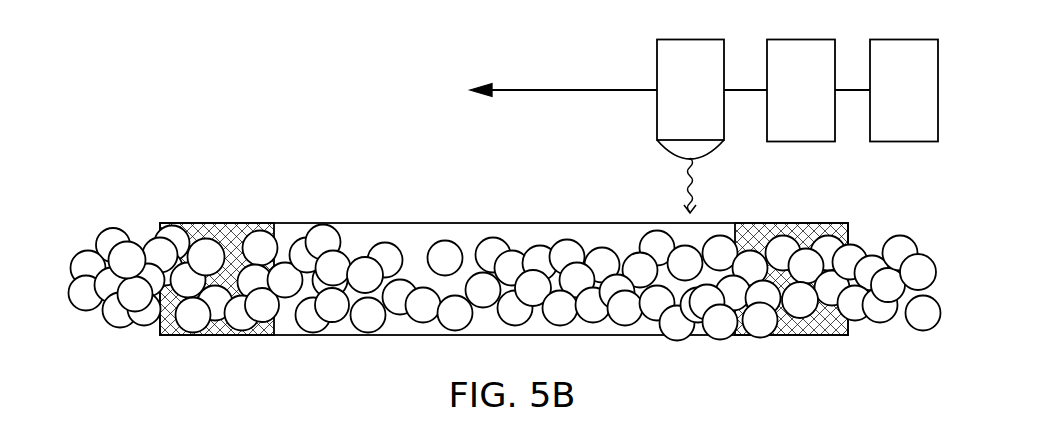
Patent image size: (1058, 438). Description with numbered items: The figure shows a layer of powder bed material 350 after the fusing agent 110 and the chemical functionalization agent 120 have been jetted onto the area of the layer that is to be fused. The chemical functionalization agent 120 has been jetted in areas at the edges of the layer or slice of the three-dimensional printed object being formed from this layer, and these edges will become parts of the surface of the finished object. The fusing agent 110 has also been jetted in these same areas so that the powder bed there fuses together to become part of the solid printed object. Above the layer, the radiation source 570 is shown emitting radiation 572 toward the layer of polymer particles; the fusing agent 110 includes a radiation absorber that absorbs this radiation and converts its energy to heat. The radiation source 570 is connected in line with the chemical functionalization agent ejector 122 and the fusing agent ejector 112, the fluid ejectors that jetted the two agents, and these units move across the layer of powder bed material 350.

The fusing agent 110 is at (544, 247).
The chemical functionalization agent 120 is at (220, 232).
The powder bed material 350 is at (115, 240).
The radiation source 570 is at (669, 102).
The radiation 572 is at (683, 202).
The chemical functionalization agent ejector 122 is at (780, 102).
The fusing agent ejector 112 is at (882, 102).